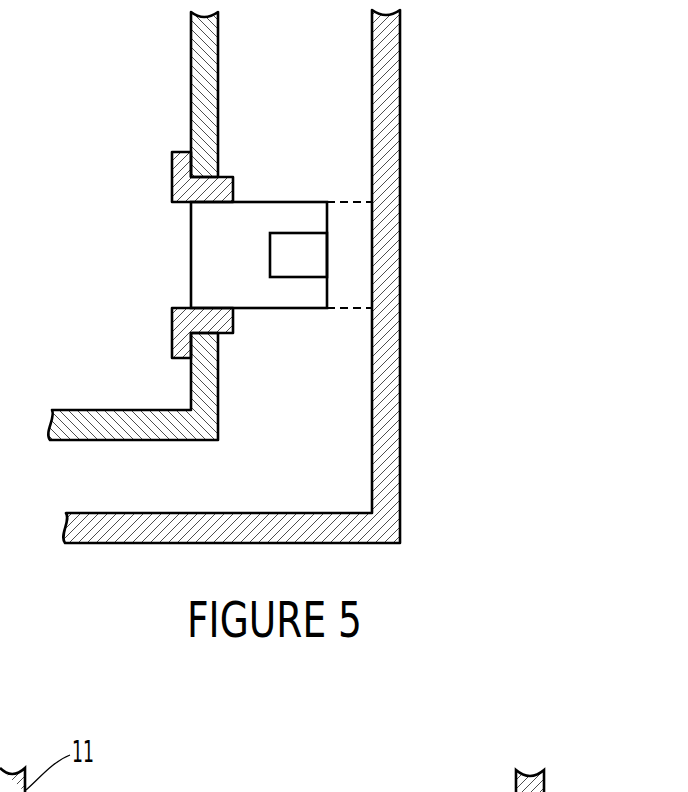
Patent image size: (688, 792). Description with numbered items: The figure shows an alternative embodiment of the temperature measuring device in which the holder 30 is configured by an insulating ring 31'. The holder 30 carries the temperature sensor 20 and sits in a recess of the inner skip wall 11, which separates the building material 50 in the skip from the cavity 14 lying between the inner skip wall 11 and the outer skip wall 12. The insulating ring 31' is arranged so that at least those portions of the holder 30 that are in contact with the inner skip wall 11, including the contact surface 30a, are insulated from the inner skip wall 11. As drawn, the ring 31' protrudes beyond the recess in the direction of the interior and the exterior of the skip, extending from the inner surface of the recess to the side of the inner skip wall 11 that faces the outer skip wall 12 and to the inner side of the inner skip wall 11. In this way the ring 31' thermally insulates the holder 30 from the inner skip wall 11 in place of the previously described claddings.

The inner skip wall 11 is at (204, 60).
The outer skip wall 12 is at (385, 58).
The cavity 14 is at (360, 251).
The temperature sensor 20 is at (314, 269).
The holder 30 is at (238, 269).
The contact surface 30a is at (187, 258).
The cladding of the holder 31' is at (231, 230).
The building material 50 is at (100, 167).